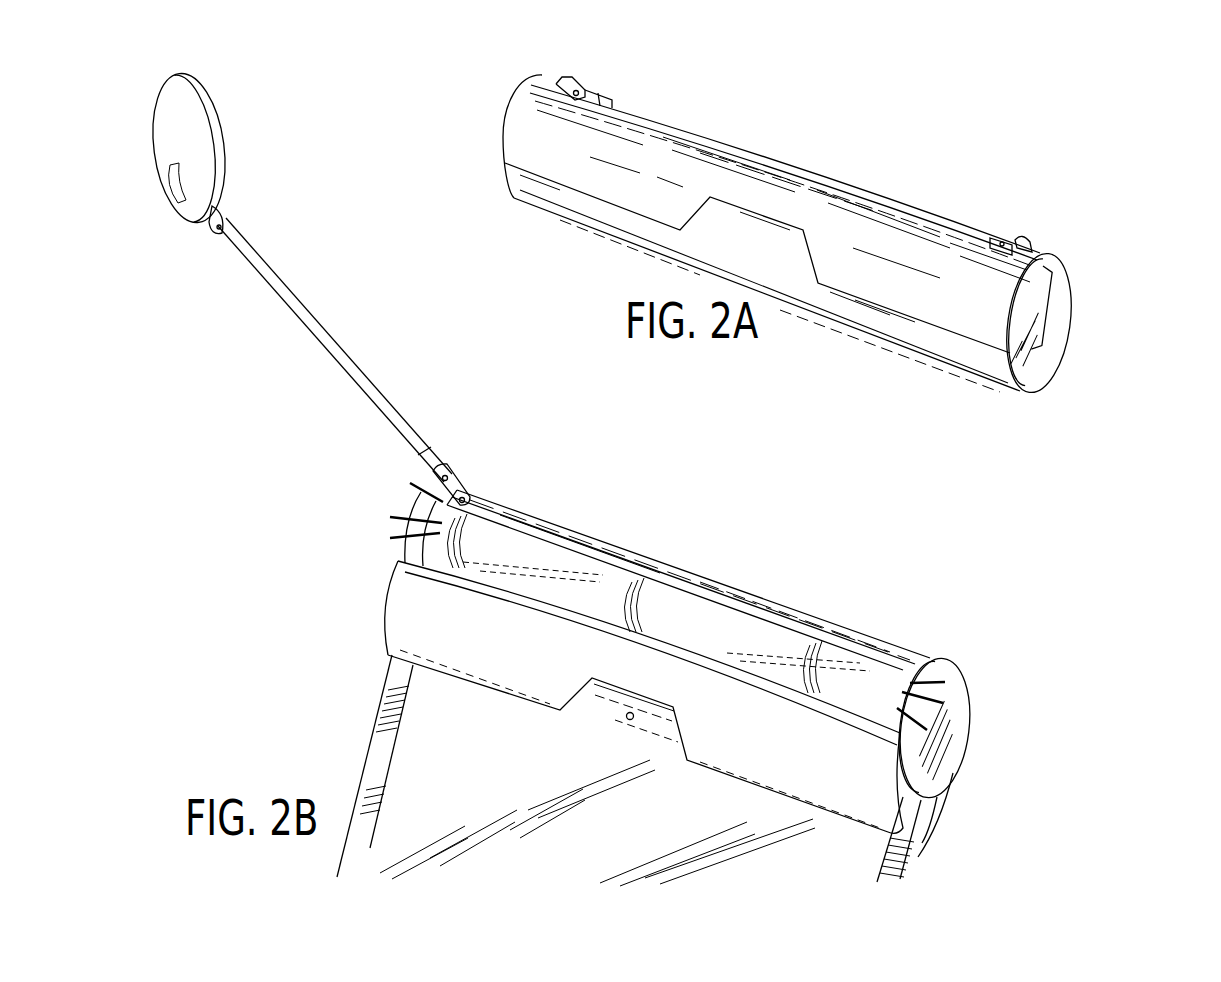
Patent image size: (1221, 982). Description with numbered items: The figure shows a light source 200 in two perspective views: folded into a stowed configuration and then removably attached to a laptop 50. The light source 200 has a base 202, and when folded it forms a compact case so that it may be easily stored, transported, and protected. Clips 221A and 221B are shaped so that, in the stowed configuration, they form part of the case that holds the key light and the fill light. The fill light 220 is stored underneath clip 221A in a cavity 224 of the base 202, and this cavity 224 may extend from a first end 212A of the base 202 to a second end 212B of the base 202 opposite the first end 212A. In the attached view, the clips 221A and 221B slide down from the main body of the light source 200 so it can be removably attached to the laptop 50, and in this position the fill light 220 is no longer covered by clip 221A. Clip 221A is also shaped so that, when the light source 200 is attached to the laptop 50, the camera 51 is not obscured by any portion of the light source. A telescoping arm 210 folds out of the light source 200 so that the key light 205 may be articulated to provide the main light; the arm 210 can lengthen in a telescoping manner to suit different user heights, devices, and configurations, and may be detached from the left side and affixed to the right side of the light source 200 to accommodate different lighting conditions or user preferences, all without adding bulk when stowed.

In FIG. 2A, the light source 200 is at (870, 138).
In FIG. 2B, the light source 200 is at (758, 545).
In FIG. 2B, the base 202 is at (893, 643).
In FIG. 2B, the key light 205 is at (170, 134).
In FIG. 2B, the telescoping arm 210 is at (312, 326).
In FIG. 2B, the first end 212A is at (420, 490).
In FIG. 2B, the second end 212B is at (970, 725).
In FIG. 2B, the fill light 220 is at (511, 547).
In FIG. 2A, the clip 221A is at (527, 121).
In FIG. 2B, the clip 221A is at (400, 614).
In FIG. 2A, the clip 221B is at (1067, 305).
In FIG. 2B, the clip 221B is at (952, 812).
In FIG. 2B, the cavity 224 is at (780, 626).
In FIG. 2B, the laptop 50 is at (477, 747).
In FIG. 2B, the camera 51 is at (625, 719).